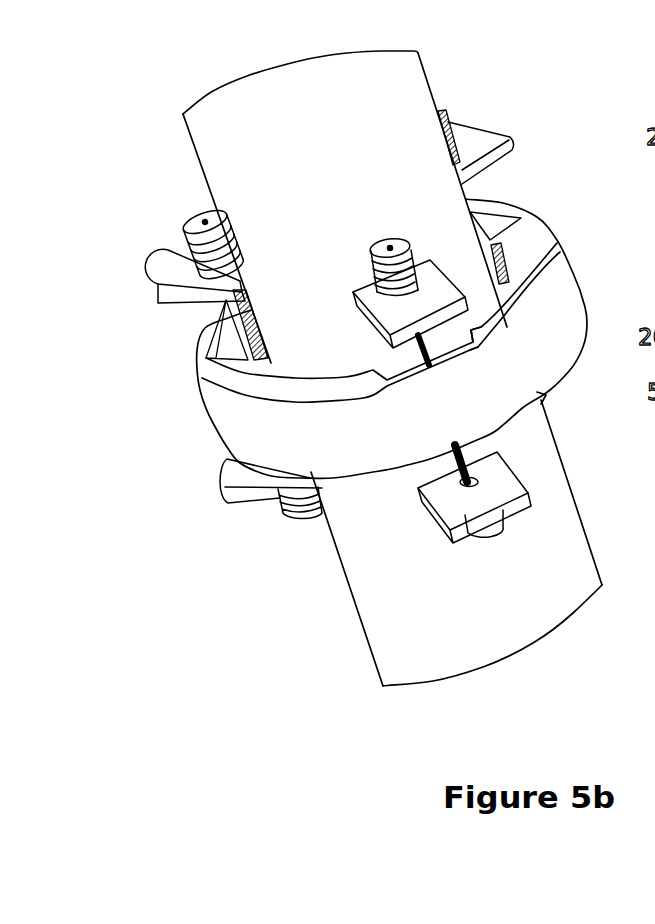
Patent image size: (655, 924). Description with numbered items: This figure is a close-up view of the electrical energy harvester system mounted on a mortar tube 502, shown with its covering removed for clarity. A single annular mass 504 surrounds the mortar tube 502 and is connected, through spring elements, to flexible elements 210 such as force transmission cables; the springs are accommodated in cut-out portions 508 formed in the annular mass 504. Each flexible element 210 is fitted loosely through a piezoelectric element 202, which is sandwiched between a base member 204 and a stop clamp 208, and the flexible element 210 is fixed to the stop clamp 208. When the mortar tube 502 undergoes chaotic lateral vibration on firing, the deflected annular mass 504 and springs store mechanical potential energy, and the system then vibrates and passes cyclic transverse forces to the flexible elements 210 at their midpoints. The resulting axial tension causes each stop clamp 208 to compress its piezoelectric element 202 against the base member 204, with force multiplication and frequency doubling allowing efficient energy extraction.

The piezoelectric element 202 is at (190, 258).
The base member 204 is at (433, 517).
The stop clamp 208 is at (360, 246).
The flexible element 210 is at (232, 320).
The mortar tube 502 is at (353, 610).
The annular mass 504 is at (215, 423).
The cut-out portion 508 is at (479, 327).